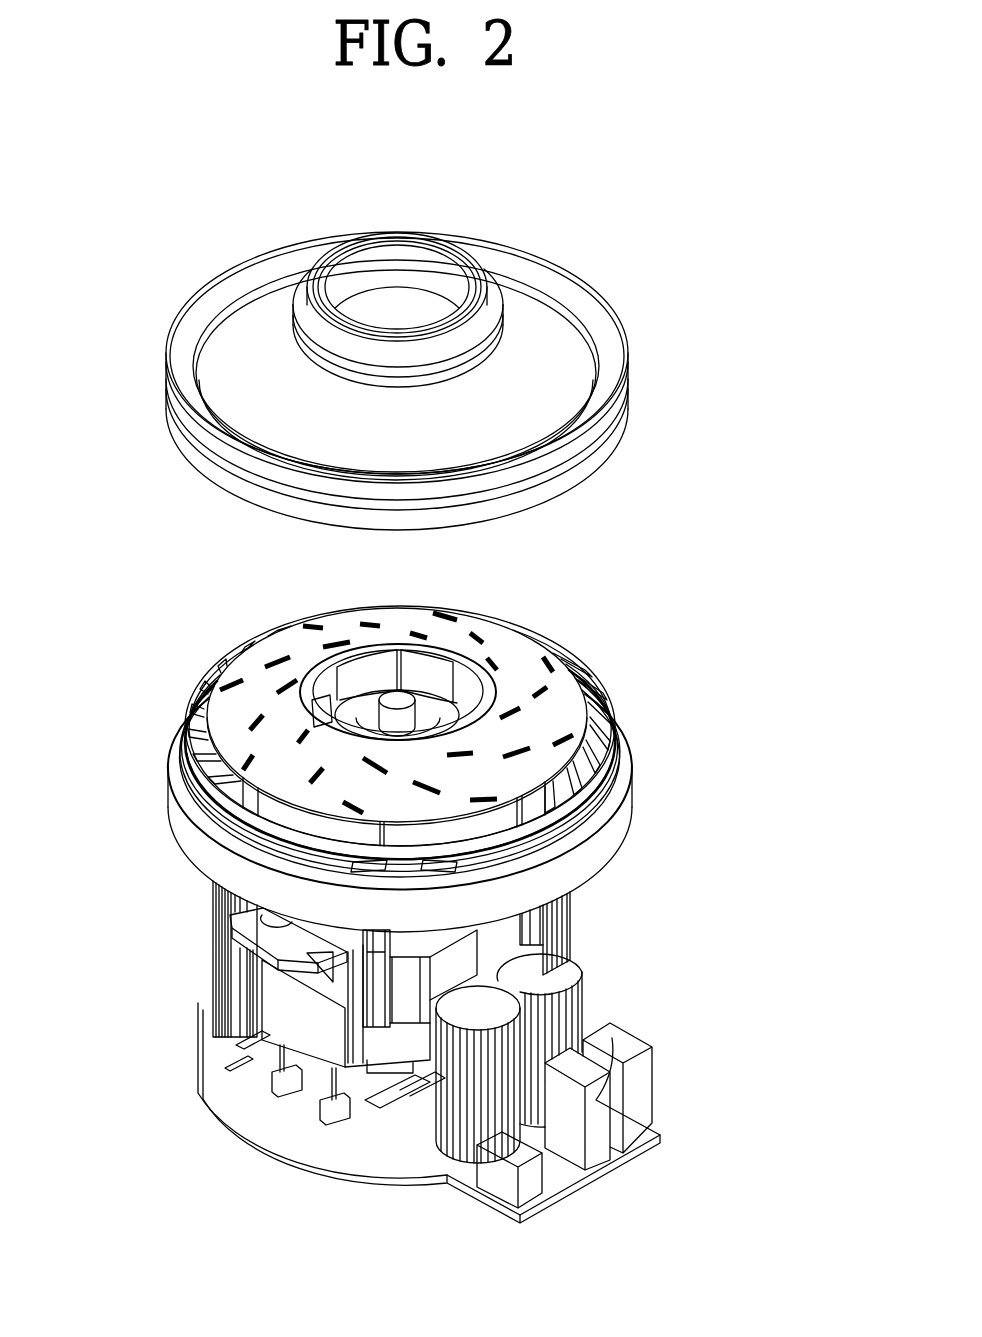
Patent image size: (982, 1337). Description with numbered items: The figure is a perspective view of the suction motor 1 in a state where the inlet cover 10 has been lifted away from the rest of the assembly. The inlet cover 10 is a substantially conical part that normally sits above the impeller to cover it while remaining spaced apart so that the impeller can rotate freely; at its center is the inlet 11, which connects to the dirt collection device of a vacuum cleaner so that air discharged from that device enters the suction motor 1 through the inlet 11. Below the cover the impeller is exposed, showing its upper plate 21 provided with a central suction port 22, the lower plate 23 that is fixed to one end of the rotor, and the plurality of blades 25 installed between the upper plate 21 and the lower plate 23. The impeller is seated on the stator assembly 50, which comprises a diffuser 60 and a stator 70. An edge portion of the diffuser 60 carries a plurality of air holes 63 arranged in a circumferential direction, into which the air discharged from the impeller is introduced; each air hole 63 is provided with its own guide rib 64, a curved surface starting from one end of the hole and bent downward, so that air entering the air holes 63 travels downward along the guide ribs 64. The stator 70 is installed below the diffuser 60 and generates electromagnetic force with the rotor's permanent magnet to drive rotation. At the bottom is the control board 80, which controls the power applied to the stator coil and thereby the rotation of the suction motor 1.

The suction motor 1 is at (431, 130).
The inlet cover 10 is at (614, 296).
The inlet 11 is at (403, 268).
The upper plate 21 is at (562, 687).
The suction port 22 is at (432, 665).
The lower plate 23 is at (560, 785).
The blades 25 is at (357, 663).
The stator assembly 50 is at (730, 858).
The diffuser 60 is at (630, 853).
The air holes 63 is at (205, 678).
The guide ribs 64 is at (193, 723).
The stator 70 is at (616, 987).
The control board 80 is at (178, 1069).